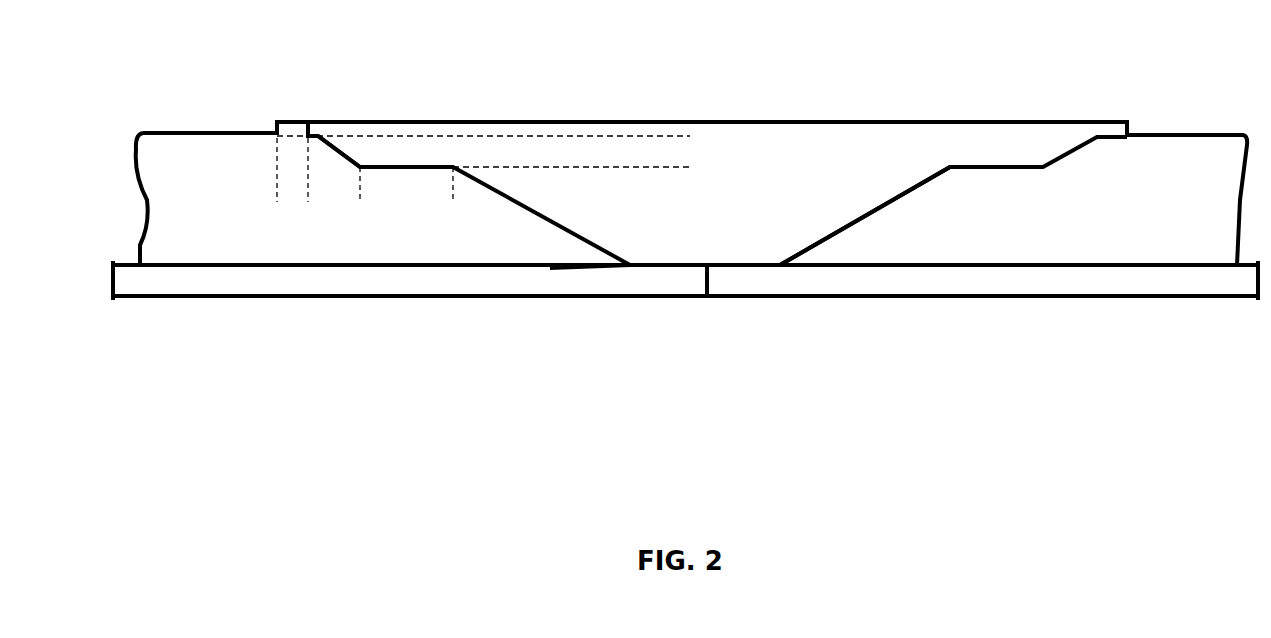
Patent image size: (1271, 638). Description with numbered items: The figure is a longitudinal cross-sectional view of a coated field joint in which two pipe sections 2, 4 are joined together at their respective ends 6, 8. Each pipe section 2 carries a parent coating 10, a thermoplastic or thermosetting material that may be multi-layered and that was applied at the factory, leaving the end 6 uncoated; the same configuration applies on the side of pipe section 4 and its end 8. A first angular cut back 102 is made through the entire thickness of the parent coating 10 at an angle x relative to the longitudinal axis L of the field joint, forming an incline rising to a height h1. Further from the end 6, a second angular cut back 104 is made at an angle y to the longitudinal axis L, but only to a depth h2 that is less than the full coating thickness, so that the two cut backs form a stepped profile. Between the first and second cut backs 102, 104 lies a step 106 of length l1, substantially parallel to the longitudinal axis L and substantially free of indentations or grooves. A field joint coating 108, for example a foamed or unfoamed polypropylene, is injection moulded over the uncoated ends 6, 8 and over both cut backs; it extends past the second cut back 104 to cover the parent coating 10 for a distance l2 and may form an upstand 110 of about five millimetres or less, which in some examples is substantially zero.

The pipe section 2 is at (422, 278).
The pipe section 4 is at (985, 278).
The end 6 is at (706, 282).
The end 8 is at (707, 275).
The parent coating 10 is at (202, 185).
The first angular cut back 102 is at (550, 262).
The second angular cut back 104 is at (340, 160).
The step 106 is at (422, 167).
The field joint coating 108 is at (775, 155).
The upstand 110 is at (304, 149).
The angle x is at (588, 265).
The angle y is at (335, 165).
The height h1 is at (650, 168).
The depth h2 is at (690, 98).
The length l1 is at (441, 193).
The distance l2 is at (277, 187).
The longitudinal axis L is at (980, 417).